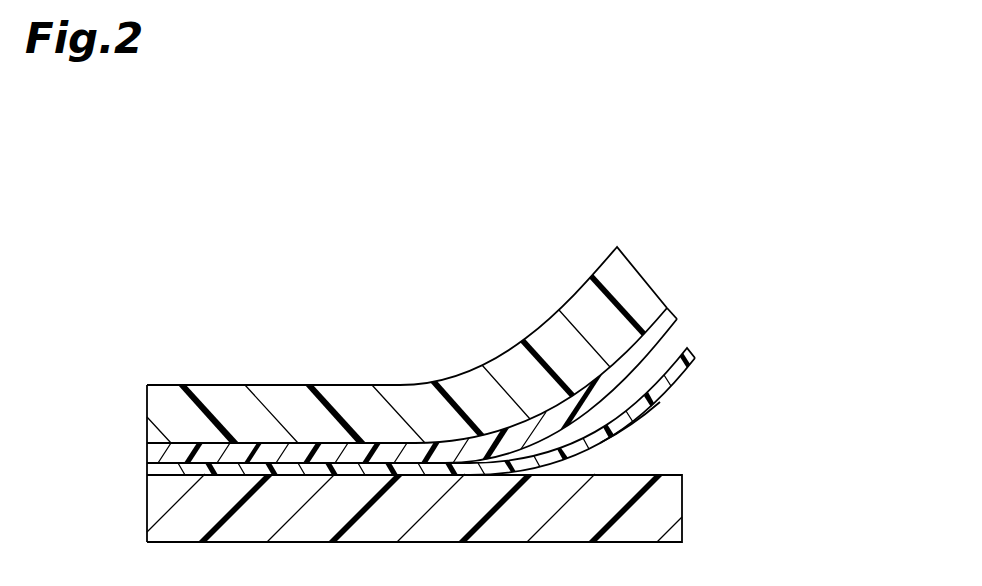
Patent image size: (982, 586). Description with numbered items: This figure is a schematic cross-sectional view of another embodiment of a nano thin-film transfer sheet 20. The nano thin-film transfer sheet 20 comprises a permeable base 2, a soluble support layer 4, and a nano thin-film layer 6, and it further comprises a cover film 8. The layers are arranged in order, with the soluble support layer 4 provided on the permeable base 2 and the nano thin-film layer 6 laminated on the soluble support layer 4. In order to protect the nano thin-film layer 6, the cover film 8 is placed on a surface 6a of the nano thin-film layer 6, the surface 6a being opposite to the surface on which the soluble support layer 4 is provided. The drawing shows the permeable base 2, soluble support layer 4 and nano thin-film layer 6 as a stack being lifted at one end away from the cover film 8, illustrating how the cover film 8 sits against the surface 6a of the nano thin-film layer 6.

The nano thin-film transfer sheet 20 is at (391, 286).
The permeable base 2 is at (632, 285).
The soluble support layer 4 is at (667, 318).
The nano thin-film layer 6 is at (695, 352).
The surface 6a is at (658, 398).
The cover film 8 is at (677, 506).